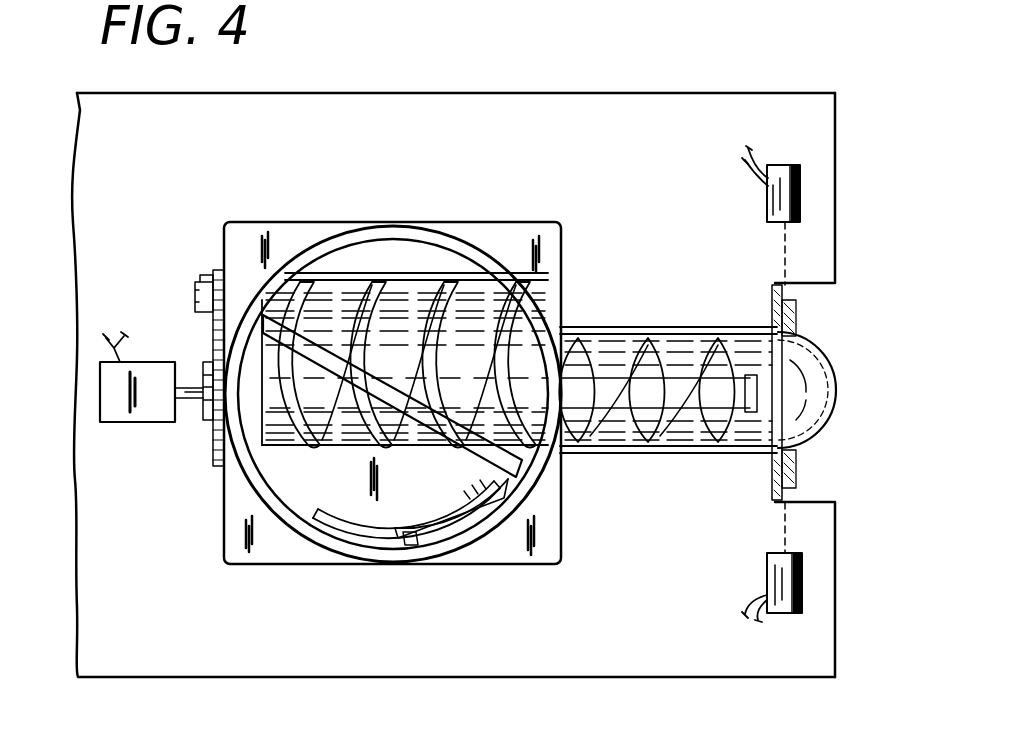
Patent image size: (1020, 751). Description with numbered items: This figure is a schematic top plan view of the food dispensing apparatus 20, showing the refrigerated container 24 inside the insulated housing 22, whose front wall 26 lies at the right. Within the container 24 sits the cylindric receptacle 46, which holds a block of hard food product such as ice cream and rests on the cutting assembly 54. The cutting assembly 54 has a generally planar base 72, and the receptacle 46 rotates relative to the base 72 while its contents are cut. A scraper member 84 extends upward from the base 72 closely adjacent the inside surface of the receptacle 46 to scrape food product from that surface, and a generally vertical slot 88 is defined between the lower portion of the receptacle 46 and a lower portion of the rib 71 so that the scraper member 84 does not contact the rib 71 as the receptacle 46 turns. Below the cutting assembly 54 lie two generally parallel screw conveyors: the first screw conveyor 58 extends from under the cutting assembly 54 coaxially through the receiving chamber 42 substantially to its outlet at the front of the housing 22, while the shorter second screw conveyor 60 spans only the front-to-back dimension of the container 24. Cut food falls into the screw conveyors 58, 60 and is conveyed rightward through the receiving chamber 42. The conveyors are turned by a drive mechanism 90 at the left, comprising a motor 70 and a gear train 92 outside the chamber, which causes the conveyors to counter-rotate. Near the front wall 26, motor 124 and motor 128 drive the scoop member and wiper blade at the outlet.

The apparatus for automatically dispensing food product 20 is at (674, 74).
The insulated housing 22 is at (383, 92).
The refrigerated container 24 is at (528, 215).
The front wall 26 is at (837, 160).
The receiving chamber 42 is at (735, 432).
The receptacle 46 is at (526, 476).
The cutting assembly 54 is at (474, 462).
The first screw conveyor 58 is at (662, 370).
The second screw conveyor 60 is at (380, 258).
The motor 70 is at (158, 424).
The rib 71 is at (442, 538).
The base 72 is at (552, 248).
The scraper member 84 is at (333, 483).
The slot 88 is at (410, 541).
The drive mechanism 90 is at (210, 337).
The gear train 92 is at (202, 425).
The motor 124 is at (767, 573).
The motor 128 is at (767, 213).